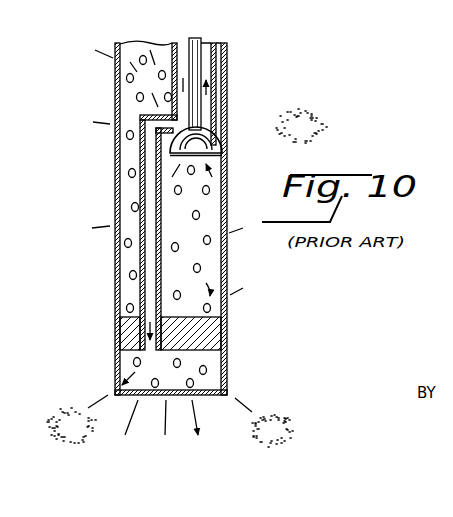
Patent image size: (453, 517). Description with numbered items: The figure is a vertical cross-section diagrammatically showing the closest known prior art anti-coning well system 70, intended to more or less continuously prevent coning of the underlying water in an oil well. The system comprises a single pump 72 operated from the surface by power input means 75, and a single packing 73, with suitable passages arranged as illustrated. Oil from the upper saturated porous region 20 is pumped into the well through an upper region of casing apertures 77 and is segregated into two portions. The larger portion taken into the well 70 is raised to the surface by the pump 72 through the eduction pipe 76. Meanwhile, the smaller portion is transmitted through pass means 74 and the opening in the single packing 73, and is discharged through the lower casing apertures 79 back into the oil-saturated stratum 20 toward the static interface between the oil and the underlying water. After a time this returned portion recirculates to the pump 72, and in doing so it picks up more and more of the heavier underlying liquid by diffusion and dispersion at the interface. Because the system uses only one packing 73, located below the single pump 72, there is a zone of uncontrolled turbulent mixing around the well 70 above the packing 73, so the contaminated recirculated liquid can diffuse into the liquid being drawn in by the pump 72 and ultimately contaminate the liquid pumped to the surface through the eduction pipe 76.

The prior art well system 70 is at (233, 100).
The single pump 72 is at (222, 143).
The single packing 73 is at (222, 333).
The pass means 74 is at (143, 185).
The power input means 75 is at (197, 40).
The eduction pipe 76 is at (172, 50).
The upper casing apertures 77 is at (116, 93).
The lower casing apertures 79 is at (194, 383).
The upper saturated porous region 20 is at (187, 278).